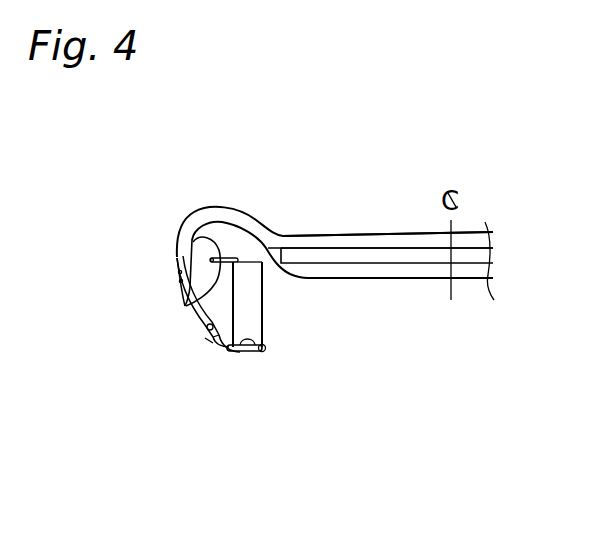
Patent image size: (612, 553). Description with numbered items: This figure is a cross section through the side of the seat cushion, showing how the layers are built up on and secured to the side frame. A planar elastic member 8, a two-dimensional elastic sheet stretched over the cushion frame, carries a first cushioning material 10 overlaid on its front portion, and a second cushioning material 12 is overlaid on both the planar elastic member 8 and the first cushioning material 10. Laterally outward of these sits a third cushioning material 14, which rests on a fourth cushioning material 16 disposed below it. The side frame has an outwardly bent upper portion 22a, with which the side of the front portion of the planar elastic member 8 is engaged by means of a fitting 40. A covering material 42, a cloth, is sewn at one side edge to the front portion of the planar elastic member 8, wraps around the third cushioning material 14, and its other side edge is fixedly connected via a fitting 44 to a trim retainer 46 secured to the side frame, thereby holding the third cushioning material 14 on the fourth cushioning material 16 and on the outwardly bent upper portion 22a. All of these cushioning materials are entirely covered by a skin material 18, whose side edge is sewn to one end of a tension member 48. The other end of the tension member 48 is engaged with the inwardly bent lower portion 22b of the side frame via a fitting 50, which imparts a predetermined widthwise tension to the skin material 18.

The planar elastic member 8 is at (377, 281).
The first cushioning material 10 is at (370, 272).
The second cushioning material 12 is at (387, 258).
The third cushioning material 14 is at (249, 250).
The fourth cushioning material 16 is at (250, 312).
The skin material 18 is at (402, 235).
The outwardly bent upper portion 22a is at (188, 306).
The inwardly bent lower portion 22b is at (240, 356).
The fitting 40 is at (192, 240).
The covering material 42 is at (201, 322).
The fitting 44 is at (221, 358).
The trim retainer 46 is at (204, 345).
The tension member 48 is at (180, 302).
The fitting 50 is at (263, 355).